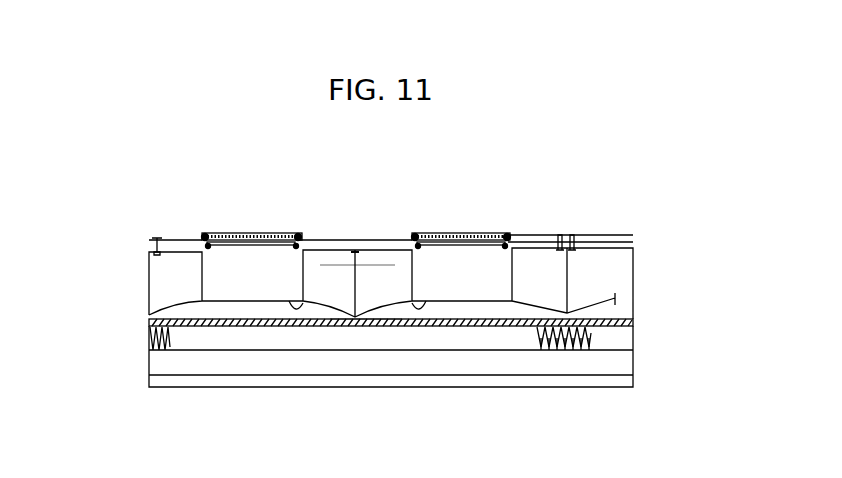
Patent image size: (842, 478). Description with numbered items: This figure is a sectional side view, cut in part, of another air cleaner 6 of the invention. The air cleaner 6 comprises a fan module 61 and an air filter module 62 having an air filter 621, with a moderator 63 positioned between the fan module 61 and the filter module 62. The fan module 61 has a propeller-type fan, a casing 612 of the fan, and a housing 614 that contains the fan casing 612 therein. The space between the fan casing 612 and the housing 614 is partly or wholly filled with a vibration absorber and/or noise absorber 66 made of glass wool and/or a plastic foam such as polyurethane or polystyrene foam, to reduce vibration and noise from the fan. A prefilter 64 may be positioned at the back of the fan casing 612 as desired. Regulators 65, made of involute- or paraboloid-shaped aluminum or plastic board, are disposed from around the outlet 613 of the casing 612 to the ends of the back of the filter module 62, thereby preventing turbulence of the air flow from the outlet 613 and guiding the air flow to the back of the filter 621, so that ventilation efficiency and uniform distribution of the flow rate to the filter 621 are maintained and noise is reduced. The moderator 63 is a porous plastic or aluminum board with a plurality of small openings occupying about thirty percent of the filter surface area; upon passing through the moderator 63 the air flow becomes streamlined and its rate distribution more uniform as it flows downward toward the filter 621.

The air cleaner 6 is at (547, 238).
The fan module 61 is at (175, 250).
The casing 612 is at (250, 253).
The outlet 613 is at (313, 297).
The housing 614 is at (148, 268).
The air filter module 62 is at (307, 340).
The air filter 621 is at (176, 342).
The moderator 63 is at (249, 319).
The prefilter 64 is at (218, 237).
The regulators 65 is at (397, 323).
The vibration absorber and/or noise absorber 66 is at (383, 262).